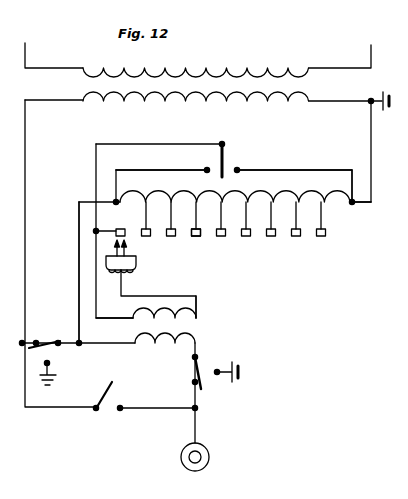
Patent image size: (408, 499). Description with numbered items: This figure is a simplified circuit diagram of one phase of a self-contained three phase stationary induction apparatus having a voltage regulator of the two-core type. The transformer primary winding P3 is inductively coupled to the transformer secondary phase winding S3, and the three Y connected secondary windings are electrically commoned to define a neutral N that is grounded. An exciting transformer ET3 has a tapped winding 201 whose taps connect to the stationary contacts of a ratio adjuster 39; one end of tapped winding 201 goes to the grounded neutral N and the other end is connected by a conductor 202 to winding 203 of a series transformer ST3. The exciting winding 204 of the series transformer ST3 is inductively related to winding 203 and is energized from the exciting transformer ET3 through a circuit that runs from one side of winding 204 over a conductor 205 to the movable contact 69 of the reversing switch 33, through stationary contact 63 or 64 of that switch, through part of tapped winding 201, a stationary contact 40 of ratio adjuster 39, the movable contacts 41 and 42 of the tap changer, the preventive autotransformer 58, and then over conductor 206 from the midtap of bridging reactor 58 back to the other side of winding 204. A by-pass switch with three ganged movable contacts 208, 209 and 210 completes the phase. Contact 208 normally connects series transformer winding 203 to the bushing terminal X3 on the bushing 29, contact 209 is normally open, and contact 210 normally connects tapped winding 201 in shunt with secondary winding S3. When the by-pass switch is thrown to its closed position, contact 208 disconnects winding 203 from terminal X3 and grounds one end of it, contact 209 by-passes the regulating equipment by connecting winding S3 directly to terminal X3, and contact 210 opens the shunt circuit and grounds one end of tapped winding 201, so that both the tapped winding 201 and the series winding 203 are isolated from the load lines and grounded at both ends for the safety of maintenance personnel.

The transformer primary winding P3 is at (238, 71).
The transformer secondary phase winding S3 is at (261, 101).
The neutral N is at (370, 100).
The movable contact of reversing switch 69 is at (219, 158).
The reversing switch 33 is at (270, 161).
The stationary contact of reversing switch 64 is at (207, 172).
The stationary contact of reversing switch 63 is at (237, 172).
The exciting transformer tapped winding 201 is at (304, 202).
The exciting transformer ET3 is at (163, 199).
The ratio adjuster 39 is at (280, 262).
The stationary contact of ratio adjuster 40 is at (200, 237).
The movable contact of tap changer 41 is at (113, 247).
The movable contact of tap changer 42 is at (128, 250).
The preventive autotransformer 58 is at (134, 273).
The conductor 202 is at (79, 279).
The exciting winding of series transformer 204 is at (164, 309).
The conductor 206 is at (197, 305).
The conductor 205 is at (95, 322).
The series transformer ST3 is at (243, 343).
The series transformer winding 203 is at (166, 346).
The movable contact of by-pass switch 210 is at (42, 343).
The movable contact of by-pass switch 208 is at (203, 380).
The movable contact of by-pass switch 209 is at (116, 394).
The bushing 29 is at (183, 465).
The bushing terminal X3 is at (197, 457).